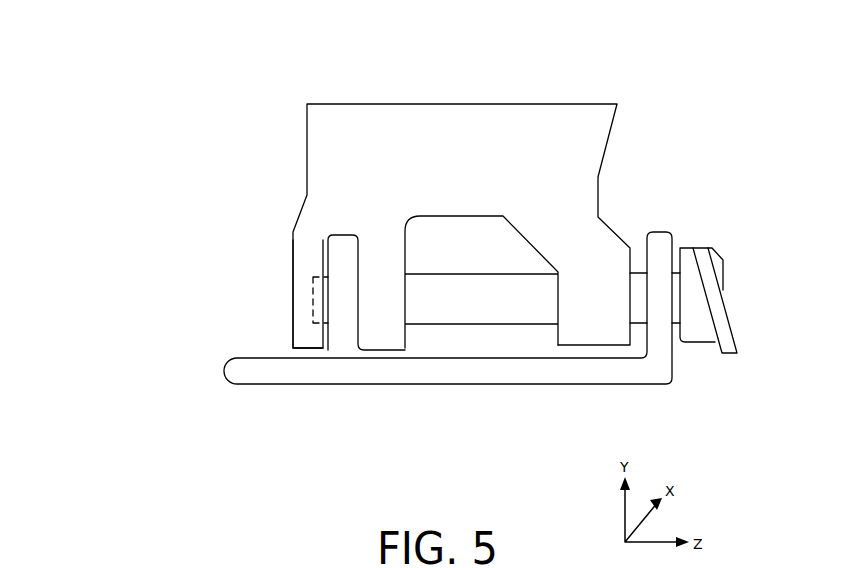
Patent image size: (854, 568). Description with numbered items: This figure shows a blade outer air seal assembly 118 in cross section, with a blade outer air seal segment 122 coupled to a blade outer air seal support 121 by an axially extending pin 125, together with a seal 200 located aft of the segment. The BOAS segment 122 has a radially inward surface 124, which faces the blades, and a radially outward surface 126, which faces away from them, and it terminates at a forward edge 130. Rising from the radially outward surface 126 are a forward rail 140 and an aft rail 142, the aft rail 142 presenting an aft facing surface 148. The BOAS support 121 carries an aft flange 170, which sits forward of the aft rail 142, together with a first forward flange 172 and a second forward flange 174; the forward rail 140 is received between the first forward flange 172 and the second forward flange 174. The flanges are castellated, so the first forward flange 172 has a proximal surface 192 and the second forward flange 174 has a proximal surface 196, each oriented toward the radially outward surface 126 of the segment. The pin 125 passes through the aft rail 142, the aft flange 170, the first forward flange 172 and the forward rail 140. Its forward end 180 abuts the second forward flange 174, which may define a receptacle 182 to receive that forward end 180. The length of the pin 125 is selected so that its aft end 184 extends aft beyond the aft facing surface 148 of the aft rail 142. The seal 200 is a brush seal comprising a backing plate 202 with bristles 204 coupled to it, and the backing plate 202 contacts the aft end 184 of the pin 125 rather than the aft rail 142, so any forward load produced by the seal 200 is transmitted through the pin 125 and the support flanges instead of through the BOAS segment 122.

The blade outer air seal assembly 118 is at (258, 92).
The blade outer air seal support 121 is at (522, 118).
The blade outer air seal segment 122 is at (422, 363).
The radially inward surface 124 is at (258, 387).
The pin 125 is at (475, 308).
The radially outward surface 126 is at (258, 358).
The forward edge 130 is at (223, 368).
The forward rail 140 is at (342, 263).
The aft rail 142 is at (655, 247).
The aft facing surface 148 is at (684, 228).
The aft flange 170 is at (600, 312).
The first forward flange 172 is at (394, 263).
The second forward flange 174 is at (291, 318).
The forward end 180 is at (313, 290).
The receptacle 182 is at (307, 259).
The aft end 184 is at (680, 303).
The proximal surface 192 is at (373, 360).
The proximal surface 196 is at (305, 348).
The seal 200 is at (713, 233).
The backing plate 202 is at (695, 327).
The bristles 204 is at (725, 330).